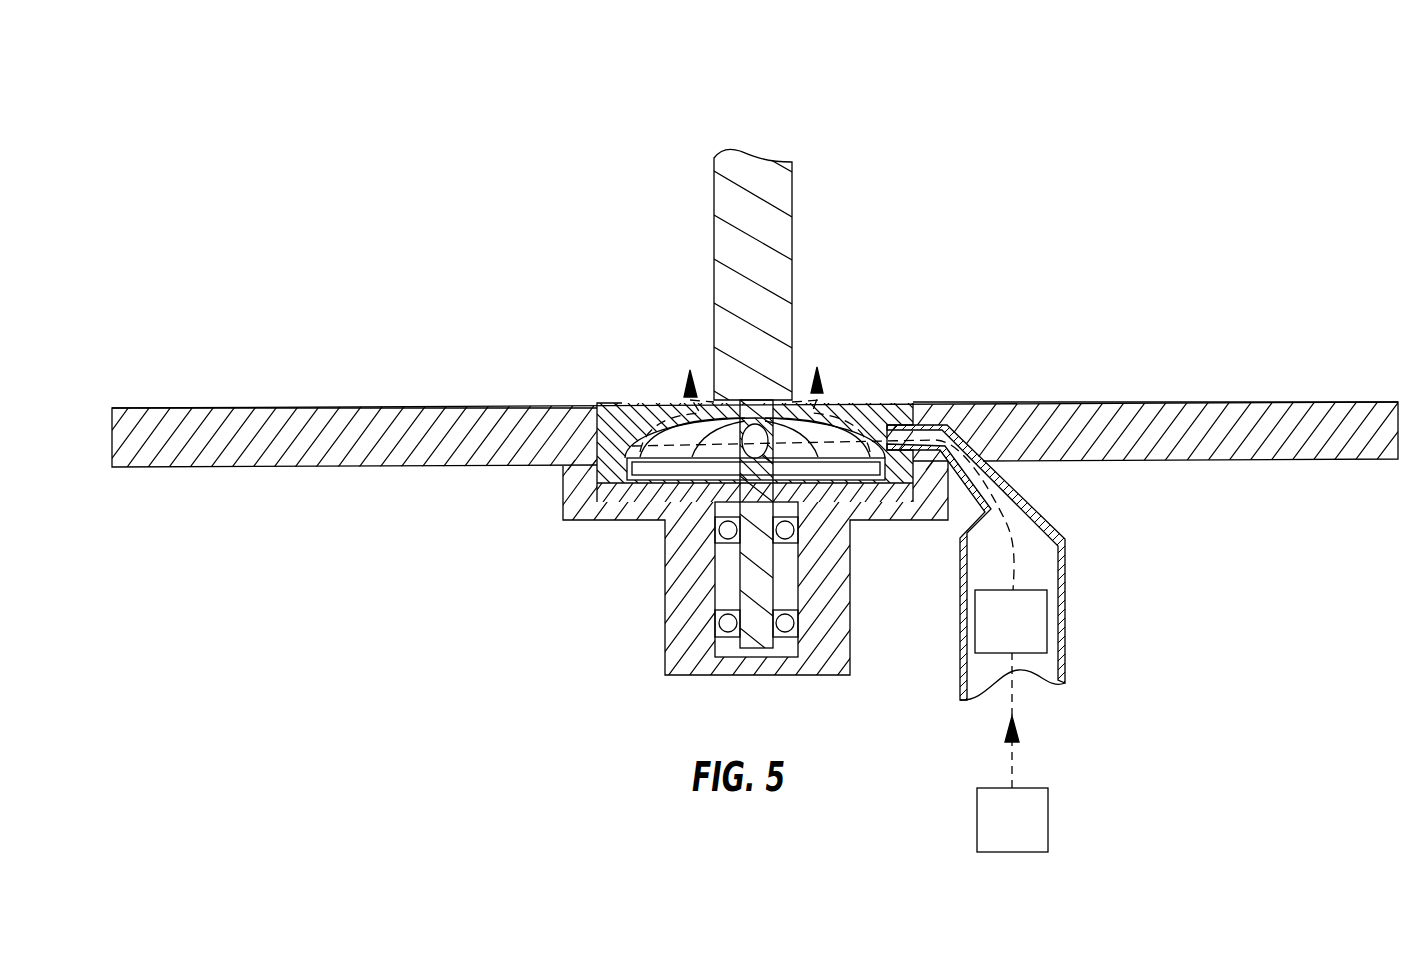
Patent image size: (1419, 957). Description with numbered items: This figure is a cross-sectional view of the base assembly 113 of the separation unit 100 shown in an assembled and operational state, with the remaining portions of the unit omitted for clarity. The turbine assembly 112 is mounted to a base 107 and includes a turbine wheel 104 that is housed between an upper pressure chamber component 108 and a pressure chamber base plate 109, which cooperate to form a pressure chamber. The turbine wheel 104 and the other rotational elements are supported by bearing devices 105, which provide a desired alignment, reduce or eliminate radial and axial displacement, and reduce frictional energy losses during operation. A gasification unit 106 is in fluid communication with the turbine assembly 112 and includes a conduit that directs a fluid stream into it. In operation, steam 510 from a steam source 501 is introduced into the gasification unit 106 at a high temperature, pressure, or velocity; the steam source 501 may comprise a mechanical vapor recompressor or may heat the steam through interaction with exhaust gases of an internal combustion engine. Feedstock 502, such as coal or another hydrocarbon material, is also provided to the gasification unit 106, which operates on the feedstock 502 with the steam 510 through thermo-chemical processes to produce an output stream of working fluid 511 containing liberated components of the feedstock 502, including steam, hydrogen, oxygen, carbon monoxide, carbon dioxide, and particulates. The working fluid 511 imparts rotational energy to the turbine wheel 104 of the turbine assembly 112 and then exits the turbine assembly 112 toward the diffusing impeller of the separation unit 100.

The separation unit 100 is at (395, 192).
The turbine wheel 104 is at (630, 493).
The bearing devices 105 is at (816, 539).
The gasification unit 106 is at (1096, 608).
The base 107 is at (285, 480).
The upper pressure chamber component 108 is at (906, 402).
The pressure chamber base plate 109 is at (652, 518).
The turbine assembly 112 is at (600, 444).
The base assembly 113 is at (1218, 297).
The steam source 501 is at (1012, 820).
The feedstock 502 is at (1011, 621).
The steam 510 is at (1008, 762).
The working fluid 511 is at (812, 396).